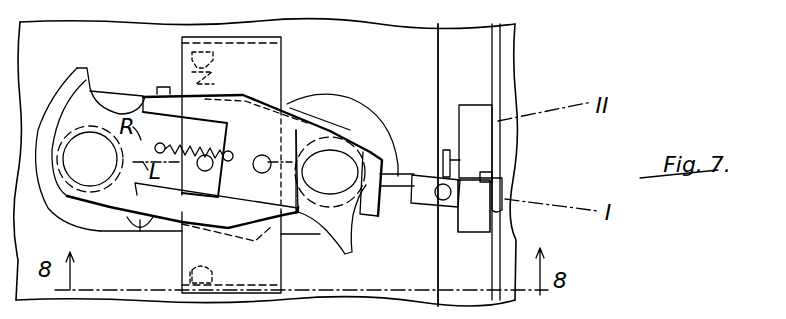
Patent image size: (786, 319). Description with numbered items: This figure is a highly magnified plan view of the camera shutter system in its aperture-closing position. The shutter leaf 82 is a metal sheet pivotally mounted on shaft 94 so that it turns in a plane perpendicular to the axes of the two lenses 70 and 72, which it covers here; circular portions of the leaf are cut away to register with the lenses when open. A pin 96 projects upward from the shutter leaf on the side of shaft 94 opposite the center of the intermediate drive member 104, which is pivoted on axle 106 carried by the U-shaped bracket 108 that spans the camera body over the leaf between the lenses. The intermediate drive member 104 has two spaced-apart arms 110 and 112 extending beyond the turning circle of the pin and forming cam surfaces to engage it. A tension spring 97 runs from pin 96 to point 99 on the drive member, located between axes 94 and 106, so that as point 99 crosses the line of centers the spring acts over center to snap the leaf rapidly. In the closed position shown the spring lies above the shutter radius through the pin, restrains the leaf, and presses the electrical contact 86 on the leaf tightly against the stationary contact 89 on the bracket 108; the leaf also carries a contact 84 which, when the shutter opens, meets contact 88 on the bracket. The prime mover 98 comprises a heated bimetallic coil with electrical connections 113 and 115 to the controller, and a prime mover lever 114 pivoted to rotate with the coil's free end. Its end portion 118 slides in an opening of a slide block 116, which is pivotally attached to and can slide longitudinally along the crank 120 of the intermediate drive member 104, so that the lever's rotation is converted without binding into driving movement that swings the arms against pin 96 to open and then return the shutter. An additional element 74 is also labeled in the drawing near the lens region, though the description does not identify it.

The lens 70 is at (58, 200).
The lens 72 is at (373, 224).
The claw arm 74 is at (360, 121).
The shutter leaf 82 is at (82, 68).
The electrical contact 84 is at (137, 232).
The electrical contact 86 is at (216, 80).
The contact 88 is at (190, 279).
The stationary contact 89 is at (214, 58).
The shaft 94 is at (210, 168).
The pin 96 is at (160, 143).
The tension spring 97 is at (190, 153).
The prime mover 98 is at (502, 105).
The point 99 is at (232, 152).
The intermediate drive member 104 is at (292, 127).
The axle 106 is at (293, 208).
The bracket 108 is at (268, 279).
The arm 110 is at (170, 98).
The arm 112 is at (140, 188).
The electrical connection 113 is at (498, 200).
The prime mover lever 114 is at (443, 150).
The electrical connection 115 is at (488, 176).
The slide block 116 is at (430, 202).
The end portion 118 is at (448, 207).
The crank 120 is at (398, 185).